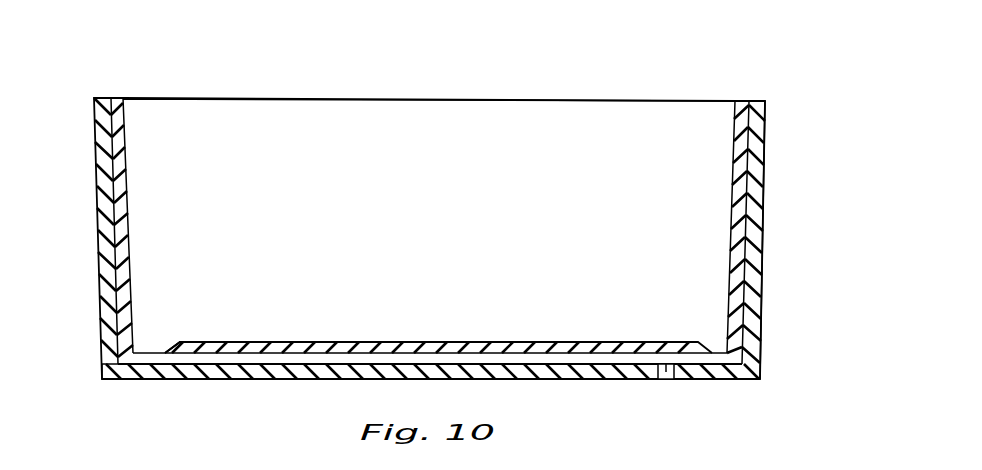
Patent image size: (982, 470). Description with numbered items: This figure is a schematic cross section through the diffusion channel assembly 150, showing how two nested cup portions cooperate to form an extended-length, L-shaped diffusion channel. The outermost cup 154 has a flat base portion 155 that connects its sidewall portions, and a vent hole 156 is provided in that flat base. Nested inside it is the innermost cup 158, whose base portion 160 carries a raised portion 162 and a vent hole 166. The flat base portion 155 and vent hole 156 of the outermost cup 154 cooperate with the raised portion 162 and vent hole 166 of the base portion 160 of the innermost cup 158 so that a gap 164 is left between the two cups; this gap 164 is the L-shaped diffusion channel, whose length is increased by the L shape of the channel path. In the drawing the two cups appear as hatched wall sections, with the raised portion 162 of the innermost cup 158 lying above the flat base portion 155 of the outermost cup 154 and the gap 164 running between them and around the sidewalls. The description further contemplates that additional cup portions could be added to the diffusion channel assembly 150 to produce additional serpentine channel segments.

The diffusion channel assembly 150 is at (645, 73).
The outermost cup 154 is at (755, 182).
The innermost cup 158 is at (735, 207).
The raised portion 162 is at (452, 342).
The gap 164 is at (265, 358).
The vent hole 166 is at (190, 345).
The base portion 160 is at (148, 366).
The flat base portion 155 is at (582, 381).
The vent hole 156 is at (667, 377).